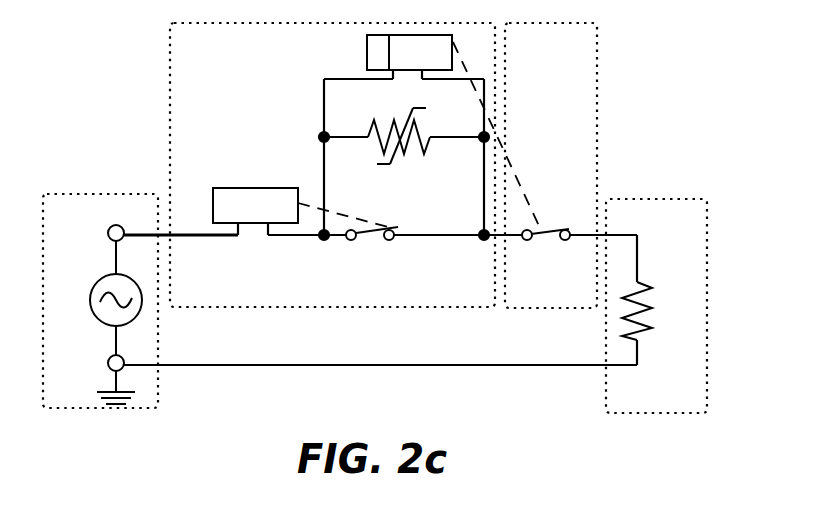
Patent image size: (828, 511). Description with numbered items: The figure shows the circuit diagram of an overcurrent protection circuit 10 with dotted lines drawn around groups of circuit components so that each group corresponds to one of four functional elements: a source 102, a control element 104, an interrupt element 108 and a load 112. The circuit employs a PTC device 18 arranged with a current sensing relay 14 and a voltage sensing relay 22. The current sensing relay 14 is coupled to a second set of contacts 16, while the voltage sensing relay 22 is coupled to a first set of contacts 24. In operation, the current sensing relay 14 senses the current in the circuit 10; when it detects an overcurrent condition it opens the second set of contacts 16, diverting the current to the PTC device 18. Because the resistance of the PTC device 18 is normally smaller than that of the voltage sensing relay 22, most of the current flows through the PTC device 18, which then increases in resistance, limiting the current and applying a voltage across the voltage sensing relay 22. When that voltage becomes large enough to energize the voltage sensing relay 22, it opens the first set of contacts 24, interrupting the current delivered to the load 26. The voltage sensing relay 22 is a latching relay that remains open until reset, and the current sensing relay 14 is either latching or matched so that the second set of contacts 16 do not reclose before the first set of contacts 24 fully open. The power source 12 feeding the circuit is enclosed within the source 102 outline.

The overcurrent protection circuit 10 is at (571, 161).
The AC power source 12 is at (93, 322).
The current sensing relay 14 is at (275, 217).
The second set of contacts 16 is at (403, 242).
The PTC device 18 is at (419, 142).
The voltage sensing relay 22 is at (437, 61).
The first set of contacts 24 is at (545, 245).
The load 26 is at (645, 293).
The source 102 is at (95, 225).
The control element 104 is at (285, 55).
The interrupt element 108 is at (574, 58).
The load 112 is at (657, 401).